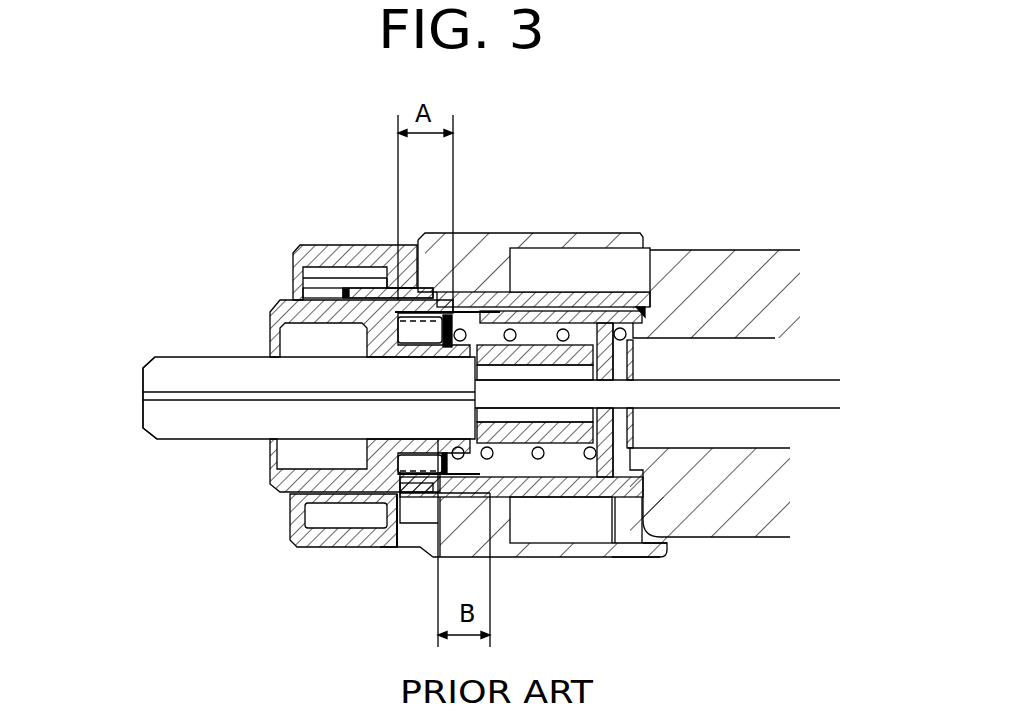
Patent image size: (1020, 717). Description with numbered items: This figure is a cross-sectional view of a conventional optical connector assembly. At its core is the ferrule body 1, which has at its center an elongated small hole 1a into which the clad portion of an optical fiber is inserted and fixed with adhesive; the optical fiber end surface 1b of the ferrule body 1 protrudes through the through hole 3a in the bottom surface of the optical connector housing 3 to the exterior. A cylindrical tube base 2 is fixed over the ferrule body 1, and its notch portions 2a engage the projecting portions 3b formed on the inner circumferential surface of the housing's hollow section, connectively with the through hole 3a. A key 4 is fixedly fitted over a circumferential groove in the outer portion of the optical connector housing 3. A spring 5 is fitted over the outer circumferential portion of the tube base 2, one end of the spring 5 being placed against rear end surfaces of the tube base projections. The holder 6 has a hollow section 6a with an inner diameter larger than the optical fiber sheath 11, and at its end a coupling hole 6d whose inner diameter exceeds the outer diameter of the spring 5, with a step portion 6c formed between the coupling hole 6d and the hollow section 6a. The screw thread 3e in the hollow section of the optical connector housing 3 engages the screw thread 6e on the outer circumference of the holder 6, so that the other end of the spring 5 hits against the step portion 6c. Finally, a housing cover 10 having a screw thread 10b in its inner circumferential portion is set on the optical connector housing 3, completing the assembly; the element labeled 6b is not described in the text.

The ferrule body 1 is at (170, 423).
The small hole 1a is at (237, 392).
The optical fiber end surface 1b is at (143, 380).
The tube base 2 is at (585, 305).
The notch portions 2a is at (450, 310).
The optical connector housing 3 is at (275, 500).
The through hole 3a is at (357, 520).
The projecting portions 3b is at (397, 520).
The screw thread 3e is at (550, 320).
The key 4 is at (303, 290).
The spring 5 is at (528, 345).
The holder 6 is at (745, 250).
The hollow section 6a is at (737, 430).
The housing flange 6b is at (612, 548).
The step portion 6c is at (648, 330).
The coupling hole 6d is at (565, 470).
The screw thread 6e is at (540, 505).
The housing cover 10 is at (317, 248).
The screw thread 10b is at (353, 267).
The optical fiber sheath 11 is at (762, 345).